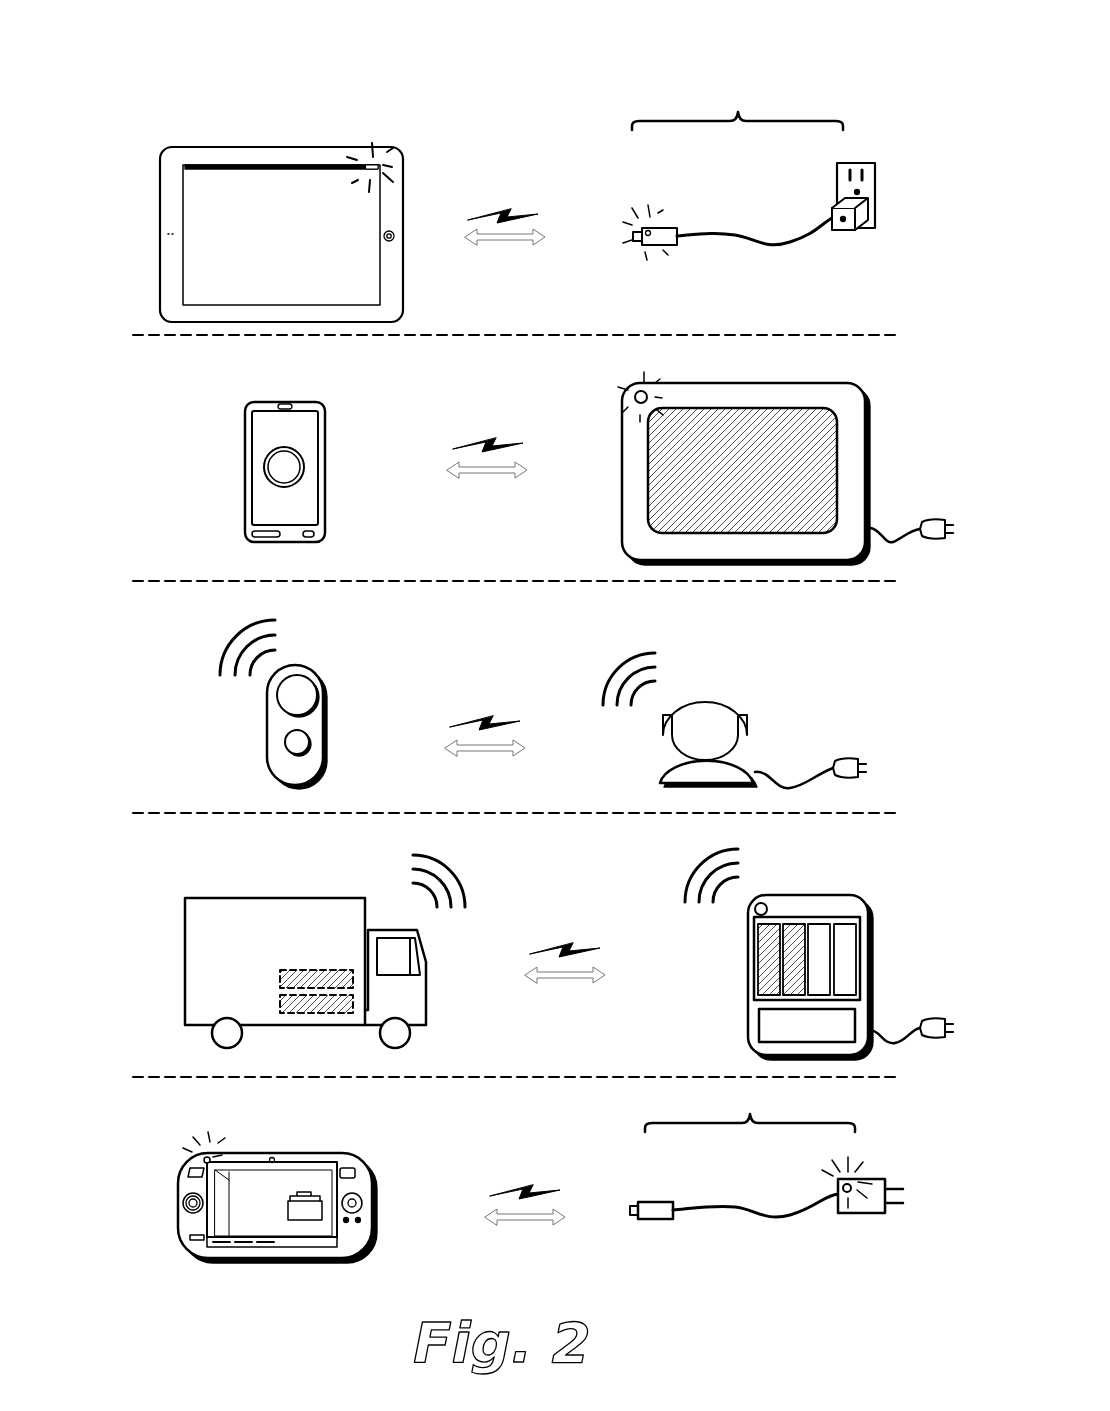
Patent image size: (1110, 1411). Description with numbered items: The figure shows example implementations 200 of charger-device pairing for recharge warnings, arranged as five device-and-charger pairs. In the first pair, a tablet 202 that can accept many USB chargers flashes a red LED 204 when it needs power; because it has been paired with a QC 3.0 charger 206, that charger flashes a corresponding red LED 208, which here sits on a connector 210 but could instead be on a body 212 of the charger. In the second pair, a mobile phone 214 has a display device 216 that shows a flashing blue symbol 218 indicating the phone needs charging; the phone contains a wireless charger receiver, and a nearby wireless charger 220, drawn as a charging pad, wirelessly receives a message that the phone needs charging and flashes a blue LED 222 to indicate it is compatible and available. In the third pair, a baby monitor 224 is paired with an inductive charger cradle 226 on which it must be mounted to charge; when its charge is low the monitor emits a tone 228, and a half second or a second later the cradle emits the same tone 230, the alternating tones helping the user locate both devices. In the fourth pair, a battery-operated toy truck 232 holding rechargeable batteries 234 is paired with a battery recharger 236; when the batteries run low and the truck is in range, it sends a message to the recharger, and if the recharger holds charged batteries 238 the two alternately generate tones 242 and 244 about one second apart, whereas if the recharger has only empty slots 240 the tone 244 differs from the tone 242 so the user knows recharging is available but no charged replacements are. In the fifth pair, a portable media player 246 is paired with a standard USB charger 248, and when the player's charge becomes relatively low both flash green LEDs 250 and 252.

The example implementations 200 is at (184, 72).
The tablet 202 is at (220, 146).
The red LED 204 is at (367, 147).
The QC 3.0 charger 206 is at (722, 102).
The corresponding red LED 208 is at (655, 246).
The connector 210 is at (655, 226).
The body 212 is at (848, 235).
The mobile phone 214 is at (270, 401).
The display device 216 is at (250, 443).
The flashing blue symbol 218 is at (275, 483).
The wireless charger 220 is at (620, 432).
The blue LED 222 is at (632, 386).
The baby monitor 224 is at (267, 724).
The inductive charger cradle 226 is at (665, 768).
The tone 228 is at (230, 636).
The tone 230 is at (611, 662).
The toy truck 232 is at (277, 897).
The rechargeable batteries 234 is at (318, 969).
The battery recharger 236 is at (808, 894).
The charged batteries 238 is at (762, 972).
The empty slots 240 is at (845, 962).
The tone 242 is at (455, 864).
The tone 244 is at (696, 864).
The portable media player 246 is at (180, 1185).
The standard USB charger 248 is at (768, 1103).
The green LED 250 is at (210, 1156).
The green LED 252 is at (850, 1194).